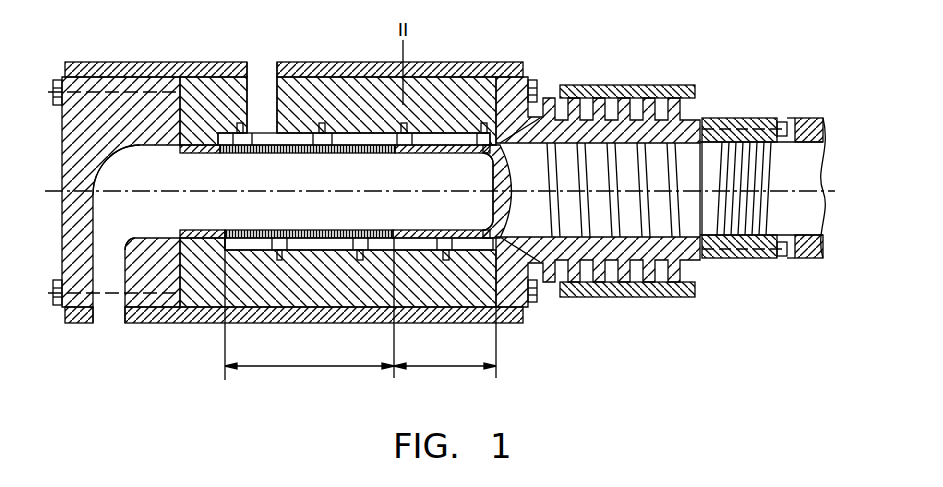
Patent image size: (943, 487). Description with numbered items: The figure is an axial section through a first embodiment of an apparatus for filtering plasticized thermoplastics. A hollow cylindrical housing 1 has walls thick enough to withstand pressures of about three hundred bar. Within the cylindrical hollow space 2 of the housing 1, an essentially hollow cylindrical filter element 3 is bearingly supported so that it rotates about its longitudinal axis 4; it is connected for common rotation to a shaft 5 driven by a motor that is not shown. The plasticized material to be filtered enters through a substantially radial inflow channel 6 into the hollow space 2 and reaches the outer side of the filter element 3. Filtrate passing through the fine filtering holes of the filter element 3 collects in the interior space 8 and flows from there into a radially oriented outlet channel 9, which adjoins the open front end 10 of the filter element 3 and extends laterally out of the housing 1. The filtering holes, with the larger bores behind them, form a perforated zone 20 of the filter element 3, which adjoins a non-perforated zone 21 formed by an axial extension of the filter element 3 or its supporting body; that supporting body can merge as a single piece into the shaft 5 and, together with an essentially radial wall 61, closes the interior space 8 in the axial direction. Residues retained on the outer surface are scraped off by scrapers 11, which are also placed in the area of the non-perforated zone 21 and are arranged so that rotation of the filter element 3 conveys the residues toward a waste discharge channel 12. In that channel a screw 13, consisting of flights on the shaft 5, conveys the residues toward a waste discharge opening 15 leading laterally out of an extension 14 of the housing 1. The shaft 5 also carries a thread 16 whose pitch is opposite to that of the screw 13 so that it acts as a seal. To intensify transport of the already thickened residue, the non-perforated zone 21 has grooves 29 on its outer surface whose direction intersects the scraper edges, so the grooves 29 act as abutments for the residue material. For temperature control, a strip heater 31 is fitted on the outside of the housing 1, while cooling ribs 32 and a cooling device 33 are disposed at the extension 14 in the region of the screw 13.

The housing 1 is at (312, 95).
The cylindrical hollow space 2 is at (363, 133).
The filter element 3 is at (316, 230).
The longitudinal axis 4 is at (167, 200).
The shaft 5 is at (806, 160).
The inflow channel 6 is at (263, 95).
The interior space 8 is at (234, 182).
The outlet channel 9 is at (110, 280).
The open front end 10 is at (178, 153).
The scrapers 11 is at (325, 148).
The waste discharge channel 12 is at (559, 156).
The screw 13 is at (638, 222).
The extension of the housing 14 is at (697, 266).
The waste discharge opening 15 is at (730, 245).
The thread 16 is at (746, 150).
The perforated zone 20 is at (360, 305).
The non-perforated zone 21 is at (445, 354).
The grooves 29 is at (472, 152).
The heater 31 is at (140, 63).
The cooling ribs 32 is at (590, 297).
The cooling device 33 is at (655, 85).
The wall 61 is at (497, 207).